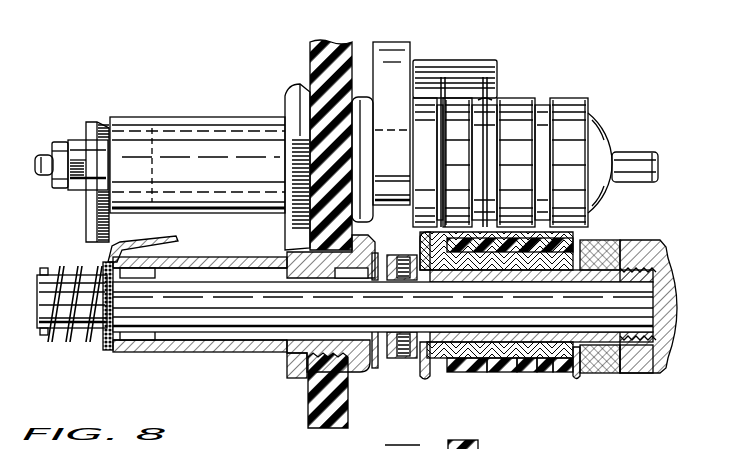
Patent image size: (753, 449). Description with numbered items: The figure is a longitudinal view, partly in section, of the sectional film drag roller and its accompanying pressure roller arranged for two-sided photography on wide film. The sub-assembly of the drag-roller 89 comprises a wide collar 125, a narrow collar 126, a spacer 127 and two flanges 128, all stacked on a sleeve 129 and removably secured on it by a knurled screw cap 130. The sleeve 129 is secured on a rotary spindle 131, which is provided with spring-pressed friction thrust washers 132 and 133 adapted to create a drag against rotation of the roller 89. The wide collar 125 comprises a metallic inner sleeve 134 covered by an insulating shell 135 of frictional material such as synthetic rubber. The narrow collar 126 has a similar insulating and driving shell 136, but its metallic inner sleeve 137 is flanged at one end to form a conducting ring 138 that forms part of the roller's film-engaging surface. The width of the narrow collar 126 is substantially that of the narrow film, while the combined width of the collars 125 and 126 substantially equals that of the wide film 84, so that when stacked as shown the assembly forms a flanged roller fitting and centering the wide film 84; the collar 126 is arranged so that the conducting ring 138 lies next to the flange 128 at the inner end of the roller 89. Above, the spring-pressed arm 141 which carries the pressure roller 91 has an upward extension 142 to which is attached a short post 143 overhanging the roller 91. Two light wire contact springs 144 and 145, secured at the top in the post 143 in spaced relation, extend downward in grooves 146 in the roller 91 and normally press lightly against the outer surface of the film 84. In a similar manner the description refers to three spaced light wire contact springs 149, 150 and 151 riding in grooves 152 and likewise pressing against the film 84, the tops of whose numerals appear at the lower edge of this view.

The wide film 84 is at (598, 228).
The drag-roller 89 is at (536, 385).
The pressure roller 91 is at (560, 104).
The wide collar 125 is at (518, 376).
The narrow collar 126 is at (460, 372).
The spacer 127 is at (610, 372).
The flanges 128 is at (428, 374).
The sleeve 129 is at (406, 360).
The knurled screw cap 130 is at (673, 280).
The rotary spindle 131 is at (240, 316).
The friction thrust washer 132 is at (348, 378).
The friction thrust washer 133 is at (108, 350).
The metallic inner sleeve 134 is at (580, 370).
The insulating shell 135 is at (556, 374).
The insulating and driving shell 136 is at (478, 372).
The metallic inner sleeve 137 is at (468, 340).
The conducting ring 138 is at (440, 370).
The spring-pressed arm 141 is at (397, 172).
The upward extension 142 is at (380, 44).
The short post 143 is at (470, 62).
The wire contact spring 144 is at (442, 95).
The wire contact spring 145 is at (482, 98).
The grooves 146 is at (440, 110).
The wire contact spring 149 is at (325, 446).
The wire contact spring 150 is at (285, 446).
The wire contact spring 151 is at (245, 446).
The grooves 152 is at (382, 441).